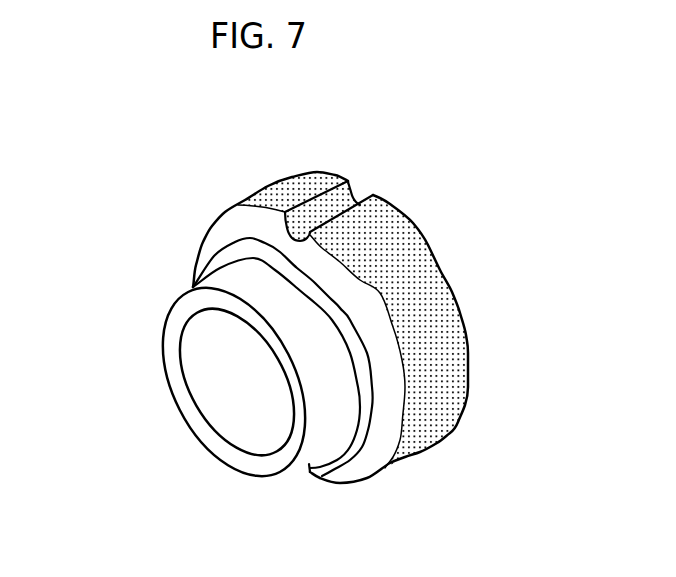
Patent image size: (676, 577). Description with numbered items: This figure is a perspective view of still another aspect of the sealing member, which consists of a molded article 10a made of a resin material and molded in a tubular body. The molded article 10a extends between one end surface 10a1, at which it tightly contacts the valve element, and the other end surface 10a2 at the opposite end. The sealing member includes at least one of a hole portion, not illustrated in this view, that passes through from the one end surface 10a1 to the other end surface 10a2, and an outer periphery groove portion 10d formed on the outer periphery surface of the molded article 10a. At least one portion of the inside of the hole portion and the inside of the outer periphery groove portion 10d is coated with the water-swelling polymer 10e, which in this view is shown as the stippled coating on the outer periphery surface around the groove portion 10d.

The molded article 10a is at (362, 468).
The one end surface 10a1 is at (180, 260).
The other end surface 10a2 is at (475, 299).
The outer periphery groove portion 10d is at (342, 207).
The water-swelling polymer 10e is at (410, 258).